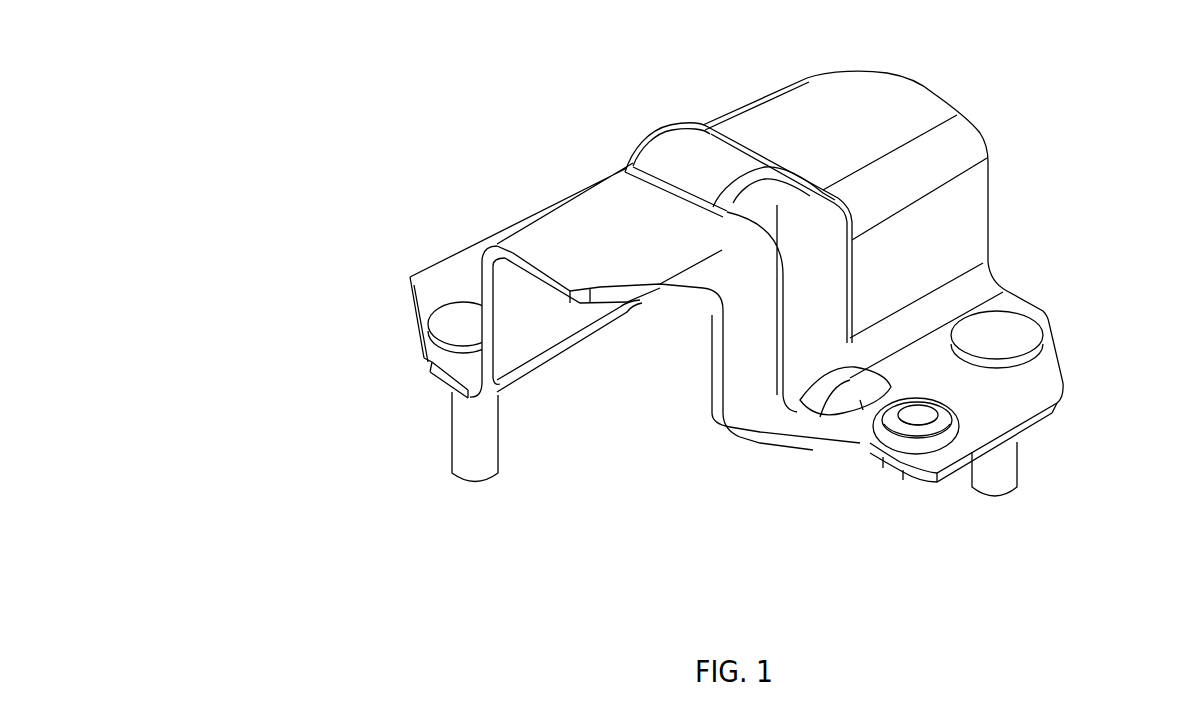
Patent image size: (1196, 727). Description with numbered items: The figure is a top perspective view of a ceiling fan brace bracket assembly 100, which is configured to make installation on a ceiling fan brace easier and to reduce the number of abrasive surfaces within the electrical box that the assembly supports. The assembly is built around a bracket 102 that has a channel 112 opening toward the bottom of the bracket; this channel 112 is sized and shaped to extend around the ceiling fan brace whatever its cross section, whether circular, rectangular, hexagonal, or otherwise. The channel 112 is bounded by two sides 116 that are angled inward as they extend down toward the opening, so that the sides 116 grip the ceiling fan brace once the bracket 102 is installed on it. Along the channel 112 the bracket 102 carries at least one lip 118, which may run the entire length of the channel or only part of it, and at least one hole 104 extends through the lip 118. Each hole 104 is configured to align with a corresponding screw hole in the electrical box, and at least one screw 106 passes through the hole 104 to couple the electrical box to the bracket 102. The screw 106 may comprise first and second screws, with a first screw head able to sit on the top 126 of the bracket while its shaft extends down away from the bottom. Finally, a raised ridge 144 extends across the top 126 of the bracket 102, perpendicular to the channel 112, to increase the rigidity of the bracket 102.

The ceiling fan brace bracket assembly 100 is at (329, 128).
The bracket 102 is at (877, 112).
The raised ridge 144 is at (702, 170).
The channel 112 is at (677, 332).
The sides 116 is at (717, 360).
The lip 118 is at (442, 283).
The screw 106 is at (1000, 337).
The hole 104 is at (912, 415).
The top 126 is at (947, 383).